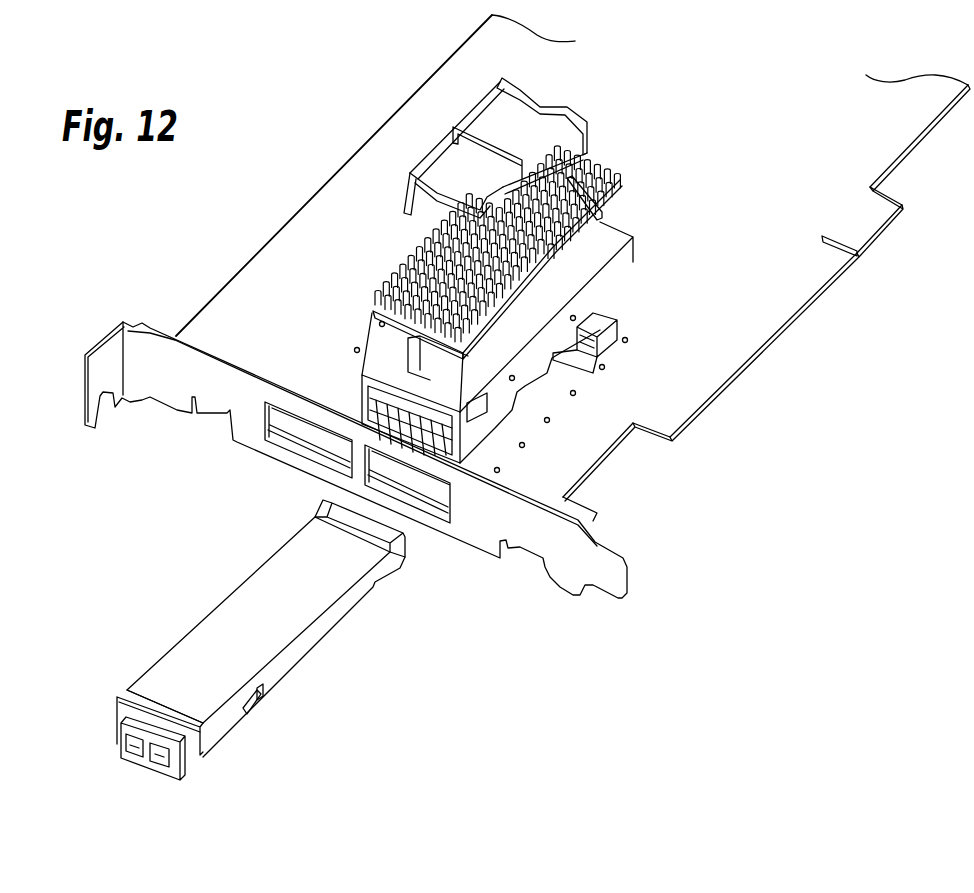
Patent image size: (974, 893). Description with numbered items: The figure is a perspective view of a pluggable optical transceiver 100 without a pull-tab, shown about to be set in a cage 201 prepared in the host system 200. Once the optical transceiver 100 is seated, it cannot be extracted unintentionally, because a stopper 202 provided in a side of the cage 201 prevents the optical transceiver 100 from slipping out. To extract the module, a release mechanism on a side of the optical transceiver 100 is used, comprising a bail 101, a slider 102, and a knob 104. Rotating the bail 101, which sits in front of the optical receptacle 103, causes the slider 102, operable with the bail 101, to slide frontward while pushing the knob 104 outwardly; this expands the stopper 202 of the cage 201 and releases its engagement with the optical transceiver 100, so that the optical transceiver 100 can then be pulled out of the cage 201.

The pluggable optical transceiver 100 is at (225, 660).
The bail 101 is at (115, 710).
The slider 102 is at (228, 732).
The optical receptacle 103 is at (128, 757).
The knob 104 is at (262, 698).
The host system 200 is at (745, 408).
The cage 201 is at (627, 257).
The stopper 202 is at (505, 420).